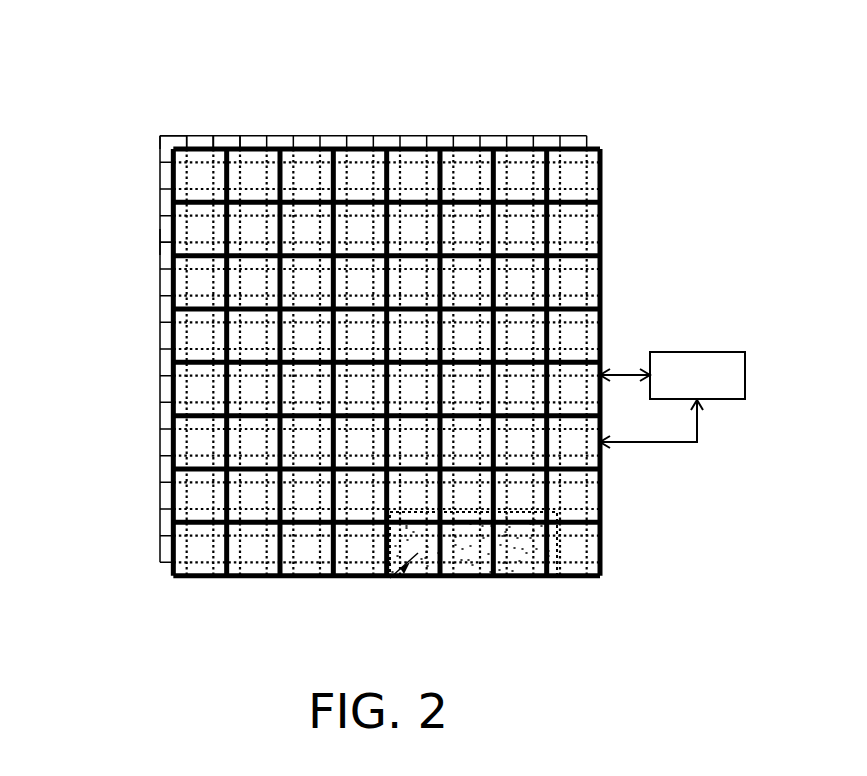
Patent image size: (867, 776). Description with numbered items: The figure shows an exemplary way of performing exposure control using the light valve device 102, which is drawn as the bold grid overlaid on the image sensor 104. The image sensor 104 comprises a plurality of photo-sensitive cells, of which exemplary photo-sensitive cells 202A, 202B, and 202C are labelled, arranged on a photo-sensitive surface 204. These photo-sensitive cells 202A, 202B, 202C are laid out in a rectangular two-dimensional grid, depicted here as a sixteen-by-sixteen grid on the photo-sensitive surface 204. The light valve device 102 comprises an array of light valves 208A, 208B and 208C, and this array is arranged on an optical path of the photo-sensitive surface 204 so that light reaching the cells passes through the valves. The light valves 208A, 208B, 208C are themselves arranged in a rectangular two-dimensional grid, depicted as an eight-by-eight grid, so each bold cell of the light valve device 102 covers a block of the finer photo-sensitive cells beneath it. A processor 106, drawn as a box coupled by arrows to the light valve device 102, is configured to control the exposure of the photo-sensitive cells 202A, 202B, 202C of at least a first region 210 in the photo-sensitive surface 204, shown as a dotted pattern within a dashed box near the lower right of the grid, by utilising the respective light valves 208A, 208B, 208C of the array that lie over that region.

The light valve device 102 is at (182, 588).
The image sensor 104 is at (152, 345).
The processor 106 is at (672, 400).
The photo-sensitive cell 202A is at (163, 143).
The photo-sensitive cell 202B is at (203, 143).
The photo-sensitive cell 202C is at (231, 143).
The photo-sensitive surface 204 is at (160, 235).
The light valve 208A is at (556, 579).
The light valve 208B is at (498, 580).
The light valve 208C is at (405, 578).
The first region 210 is at (398, 577).